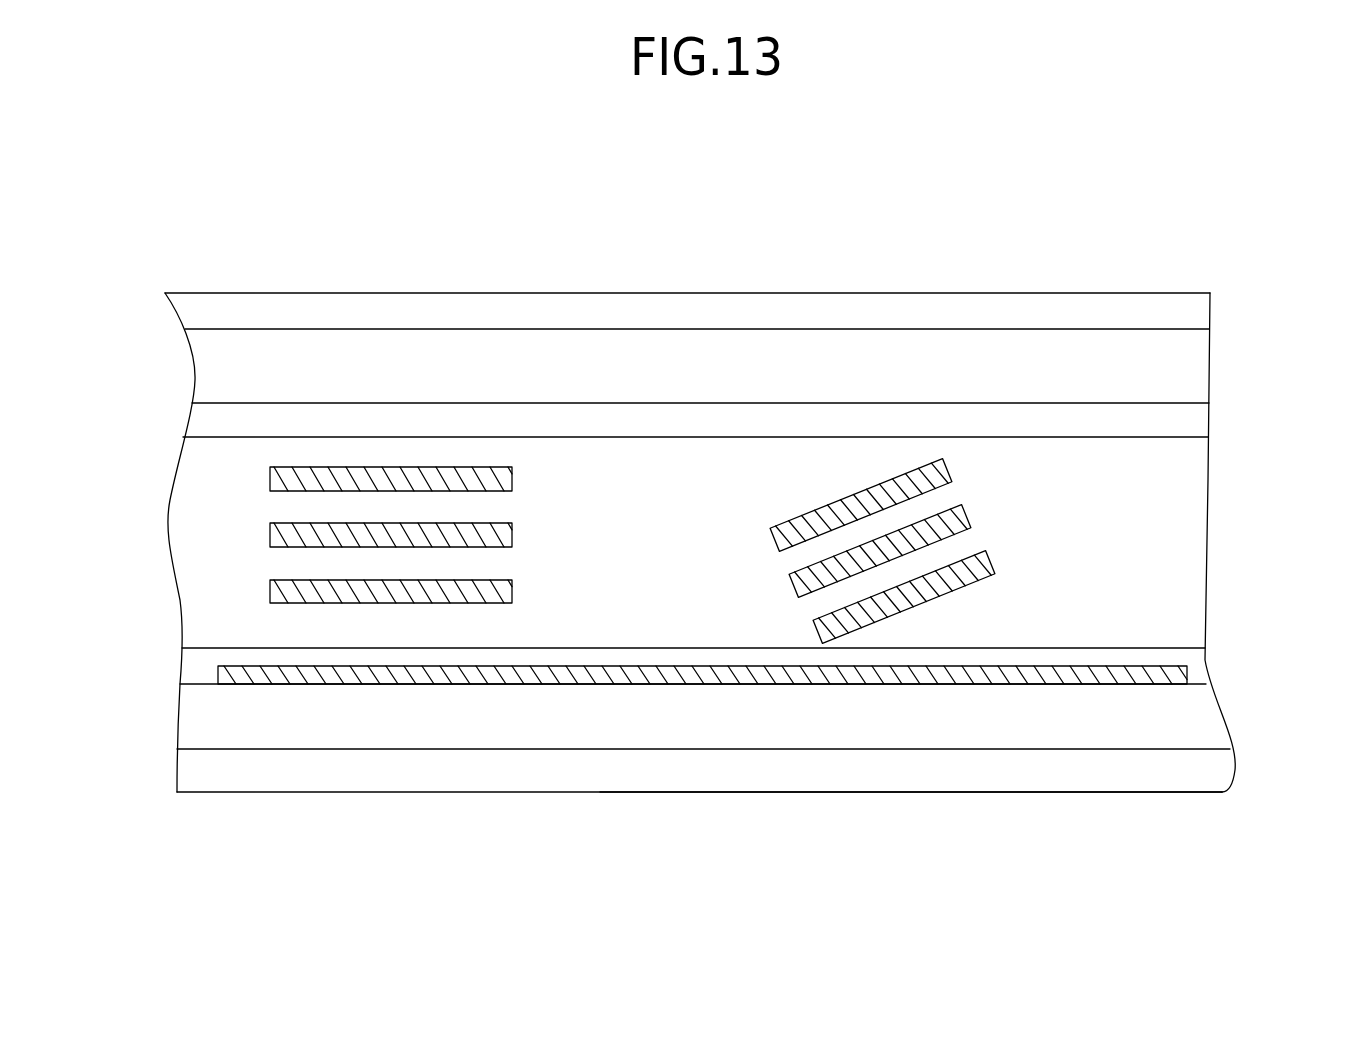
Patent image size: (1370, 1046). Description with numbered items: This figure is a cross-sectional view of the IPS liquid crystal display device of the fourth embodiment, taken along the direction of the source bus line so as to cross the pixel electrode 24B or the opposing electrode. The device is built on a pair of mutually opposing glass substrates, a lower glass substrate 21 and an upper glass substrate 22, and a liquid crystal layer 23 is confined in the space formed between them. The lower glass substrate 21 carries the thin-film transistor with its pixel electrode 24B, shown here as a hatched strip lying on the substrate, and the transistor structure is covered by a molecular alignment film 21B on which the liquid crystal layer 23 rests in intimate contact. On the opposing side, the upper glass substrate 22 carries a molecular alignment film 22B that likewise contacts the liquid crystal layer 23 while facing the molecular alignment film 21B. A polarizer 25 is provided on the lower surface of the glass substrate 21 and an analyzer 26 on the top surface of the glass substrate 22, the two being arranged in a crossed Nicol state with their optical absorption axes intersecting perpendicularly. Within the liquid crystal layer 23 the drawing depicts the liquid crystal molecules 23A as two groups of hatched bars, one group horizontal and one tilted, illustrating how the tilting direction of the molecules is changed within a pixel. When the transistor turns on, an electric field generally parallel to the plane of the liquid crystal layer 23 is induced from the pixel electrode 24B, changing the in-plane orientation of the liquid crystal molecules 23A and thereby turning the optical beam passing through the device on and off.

The analyzer 26 is at (1192, 318).
The glass substrate 22 is at (1192, 387).
The molecular alignment film 22B is at (1192, 465).
The liquid crystal layer 23 is at (1237, 483).
The liquid crystal molecules 23A is at (672, 548).
The molecular alignment film 21B is at (1195, 668).
The glass substrate 21 is at (1198, 727).
The pixel electrode 24B is at (767, 670).
The polarizer 25 is at (1100, 775).